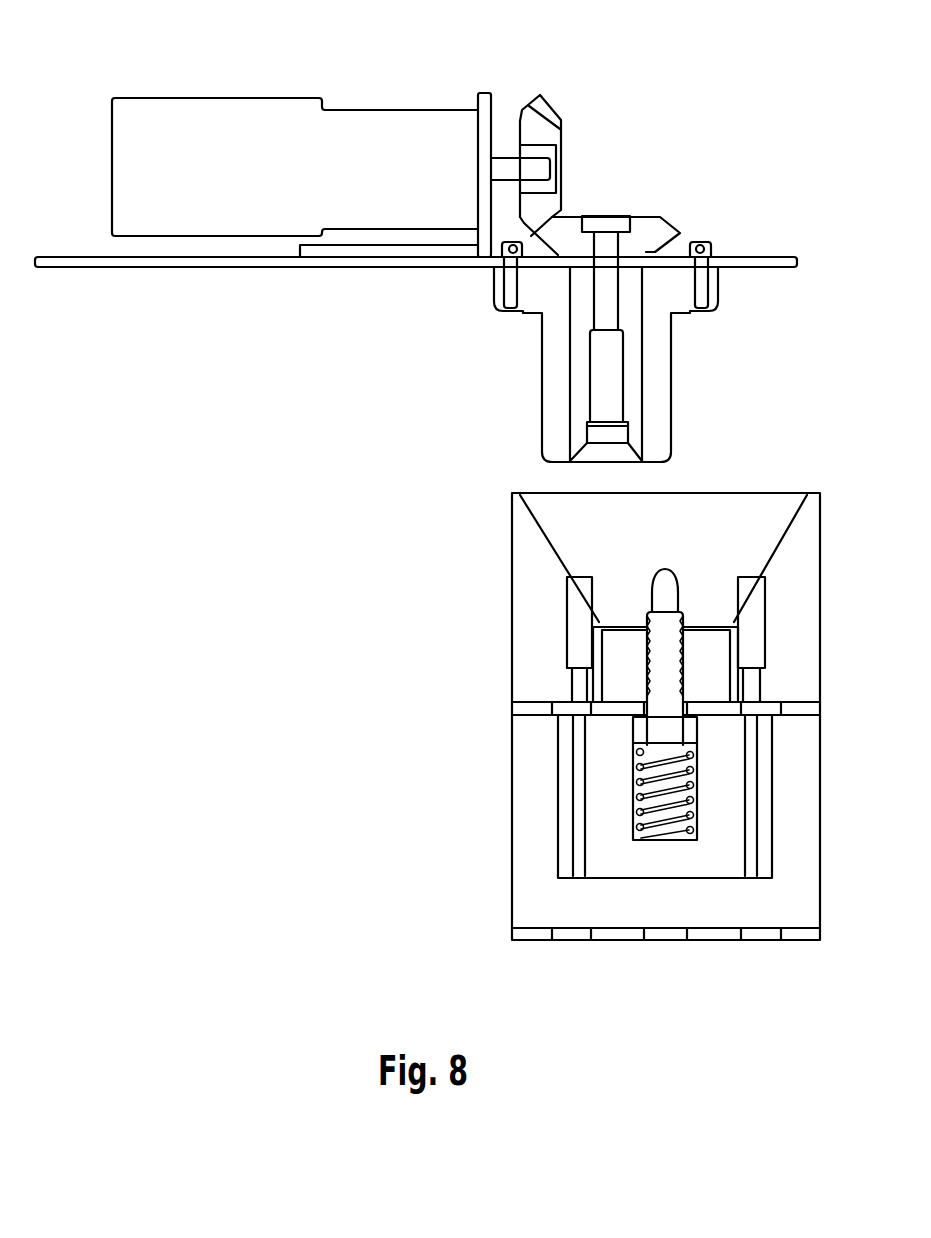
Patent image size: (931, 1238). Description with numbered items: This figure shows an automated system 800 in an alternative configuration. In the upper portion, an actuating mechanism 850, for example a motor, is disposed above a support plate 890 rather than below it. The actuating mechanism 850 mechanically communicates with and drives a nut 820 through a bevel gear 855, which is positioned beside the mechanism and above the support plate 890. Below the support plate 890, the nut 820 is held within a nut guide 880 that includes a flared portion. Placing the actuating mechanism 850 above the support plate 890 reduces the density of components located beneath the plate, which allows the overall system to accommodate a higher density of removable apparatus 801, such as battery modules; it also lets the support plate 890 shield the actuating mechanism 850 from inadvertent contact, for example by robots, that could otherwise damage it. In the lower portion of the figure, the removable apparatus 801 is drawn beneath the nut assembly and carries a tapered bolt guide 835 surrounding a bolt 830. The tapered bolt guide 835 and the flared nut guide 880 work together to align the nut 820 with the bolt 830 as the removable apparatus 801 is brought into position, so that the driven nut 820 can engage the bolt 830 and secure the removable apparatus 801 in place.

The automated system 800 is at (423, 237).
The actuating mechanism 850 is at (295, 167).
The bevel gear 855 is at (592, 166).
The support plate 890 is at (753, 242).
The nut guide 880 is at (698, 373).
The nut 820 is at (648, 414).
The removable apparatus 801 is at (562, 716).
The bolt guide 835 is at (492, 617).
The bolt 830 is at (704, 663).